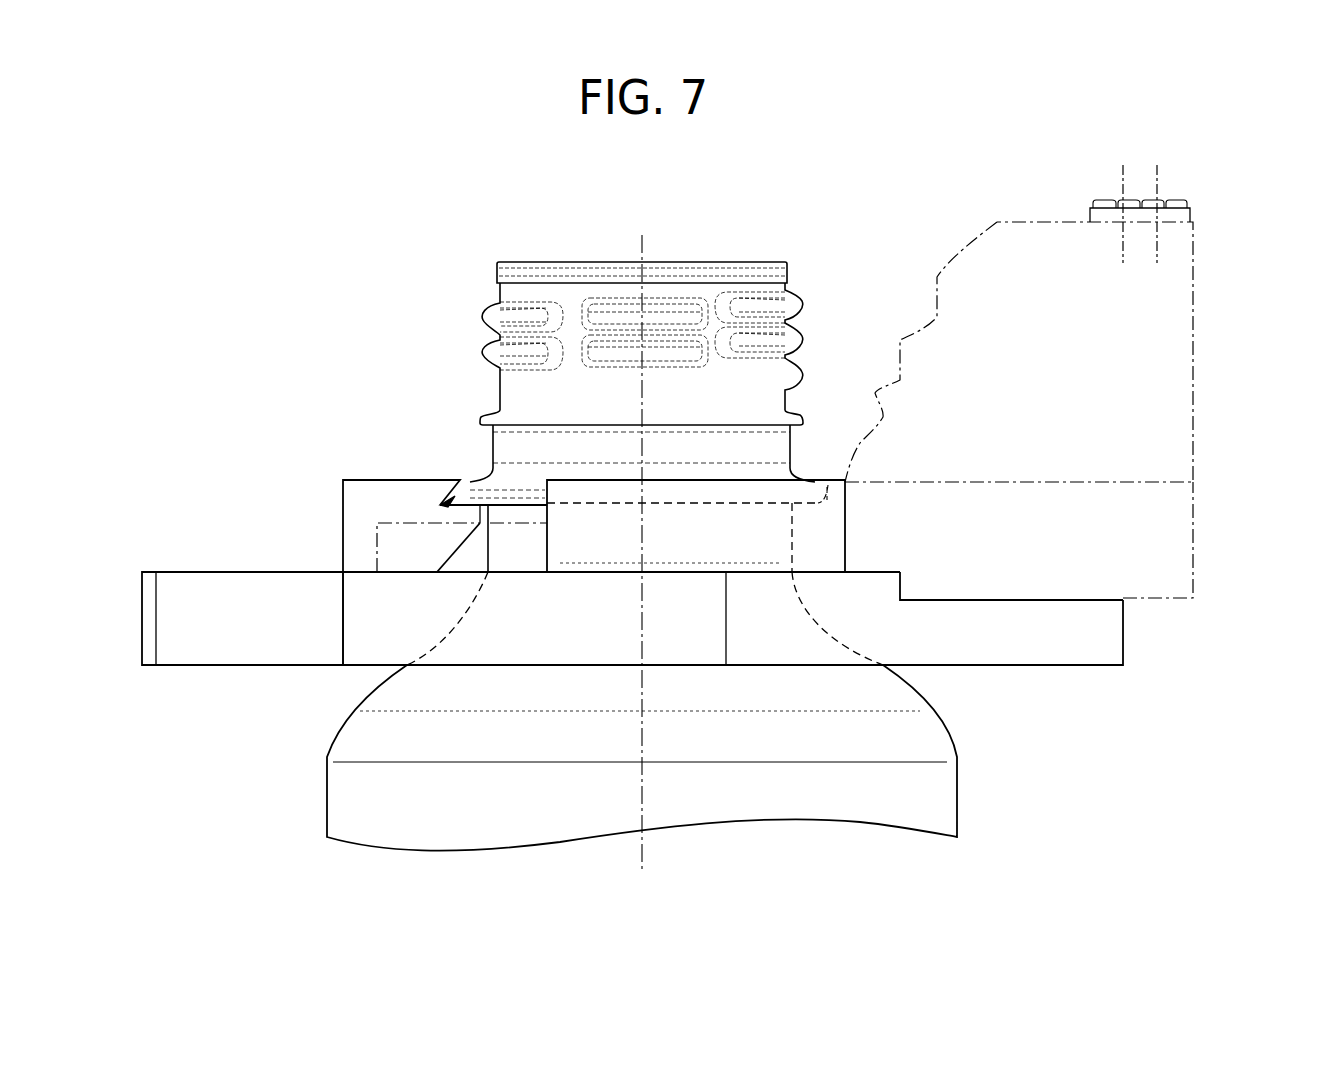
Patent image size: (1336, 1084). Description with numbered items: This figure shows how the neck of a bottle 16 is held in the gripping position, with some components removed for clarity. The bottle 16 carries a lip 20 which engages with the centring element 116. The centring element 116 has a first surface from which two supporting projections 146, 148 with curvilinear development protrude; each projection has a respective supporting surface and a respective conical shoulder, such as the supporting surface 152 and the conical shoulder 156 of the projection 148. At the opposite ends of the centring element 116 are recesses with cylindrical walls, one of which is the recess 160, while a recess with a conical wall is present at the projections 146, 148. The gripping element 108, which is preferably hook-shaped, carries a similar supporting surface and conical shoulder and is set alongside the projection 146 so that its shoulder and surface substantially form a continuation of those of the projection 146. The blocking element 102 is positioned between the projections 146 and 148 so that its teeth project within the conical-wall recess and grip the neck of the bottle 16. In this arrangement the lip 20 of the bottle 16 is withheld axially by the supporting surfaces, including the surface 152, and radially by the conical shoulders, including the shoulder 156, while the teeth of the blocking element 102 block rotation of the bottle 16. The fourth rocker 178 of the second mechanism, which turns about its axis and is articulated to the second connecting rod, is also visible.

The bottle 16 is at (957, 785).
The lip 20 is at (472, 482).
The blocking element 102 is at (375, 550).
The gripping element 108 is at (1193, 542).
The centring element 116 is at (957, 600).
The supporting projection 146 is at (837, 480).
The supporting projection 148 is at (372, 480).
The supporting surface 152 is at (457, 498).
The conical shoulder 156 is at (440, 500).
The recess 160 is at (1045, 653).
The fourth rocker 178 is at (1195, 346).